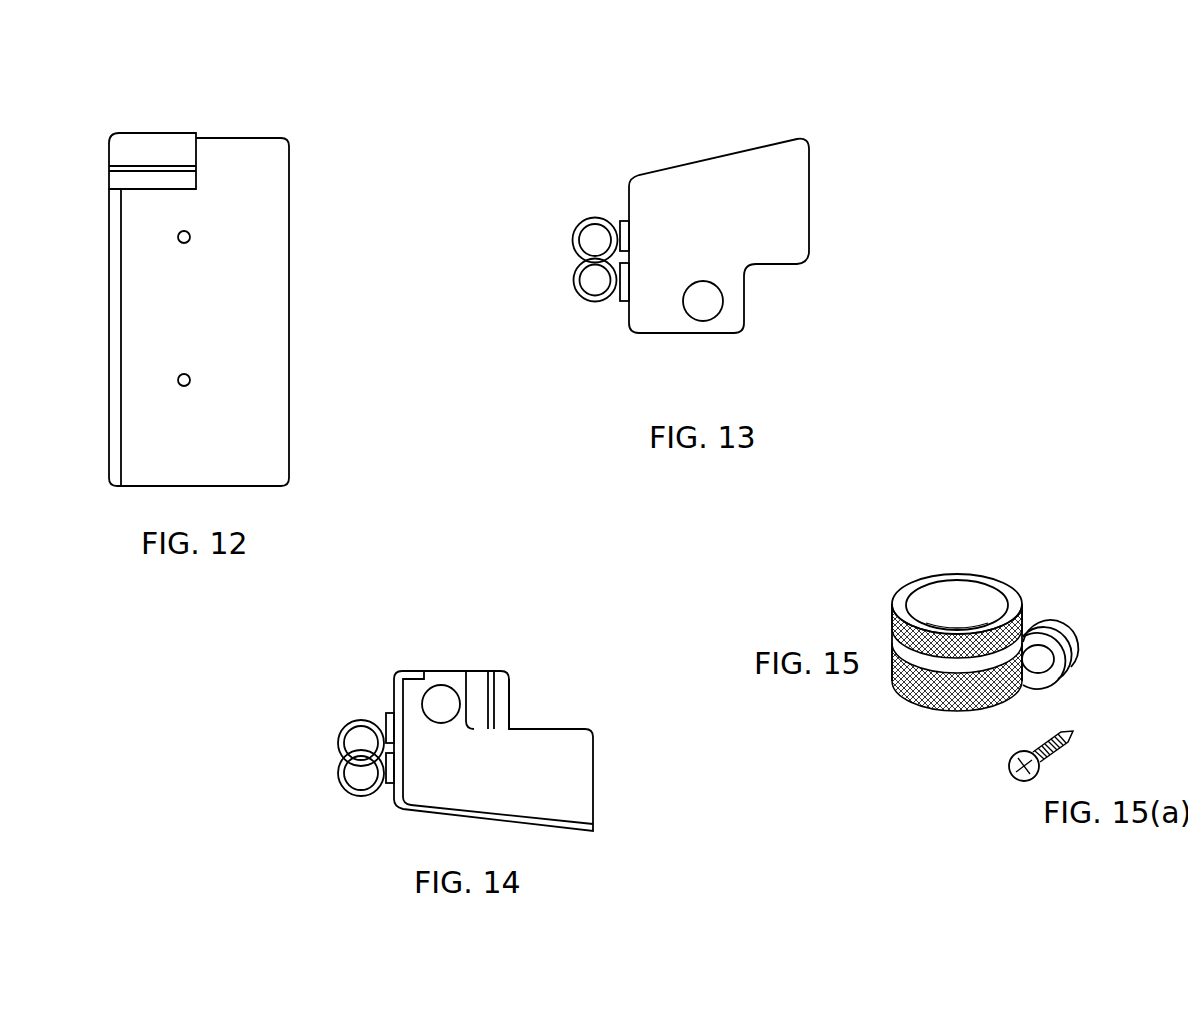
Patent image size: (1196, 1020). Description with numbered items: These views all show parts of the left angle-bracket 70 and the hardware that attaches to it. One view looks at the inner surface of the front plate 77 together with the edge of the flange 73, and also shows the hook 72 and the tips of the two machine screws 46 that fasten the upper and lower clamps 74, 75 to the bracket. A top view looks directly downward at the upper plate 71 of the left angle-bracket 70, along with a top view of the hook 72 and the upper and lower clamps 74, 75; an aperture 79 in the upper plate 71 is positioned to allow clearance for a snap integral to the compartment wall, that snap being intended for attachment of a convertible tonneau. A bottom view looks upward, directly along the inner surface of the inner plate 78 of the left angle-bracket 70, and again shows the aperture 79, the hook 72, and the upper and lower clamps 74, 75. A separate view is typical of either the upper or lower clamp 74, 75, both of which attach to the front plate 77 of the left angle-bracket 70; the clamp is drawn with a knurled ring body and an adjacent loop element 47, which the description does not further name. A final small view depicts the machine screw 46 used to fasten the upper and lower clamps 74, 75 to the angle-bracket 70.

In FIG. 12, the left angle-bracket 70 is at (263, 98).
In FIG. 13, the left angle-bracket 70 is at (760, 100).
In FIG. 14, the left angle-bracket 70 is at (500, 628).
In FIG. 13, the upper plate 71 is at (690, 182).
In FIG. 12, the hook 72 is at (163, 130).
In FIG. 13, the hook 72 is at (742, 282).
In FIG. 14, the hook 72 is at (510, 717).
In FIG. 12, the flange 73 is at (113, 272).
In FIG. 13, the upper clamp 74 is at (571, 238).
In FIG. 14, the upper clamp 74 is at (337, 740).
In FIG. 15, the upper clamp 74 is at (957, 572).
In FIG. 13, the lower clamp 75 is at (571, 270).
In FIG. 14, the lower clamp 75 is at (337, 775).
In FIG. 15, the lower clamp 75 is at (957, 642).
In FIG. 12, the front plate 77 is at (263, 432).
In FIG. 14, the inner plate 78 is at (537, 817).
In FIG. 13, the aperture 79 is at (708, 318).
In FIG. 14, the aperture 79 is at (441, 685).
In FIG. 12, the machine screw 46 is at (190, 236).
In FIG. 15A, the machine screw 46 is at (1008, 764).
In FIG. 14, the hinge loop 47 is at (388, 712).
In FIG. 15, the hinge loop 47 is at (1052, 622).